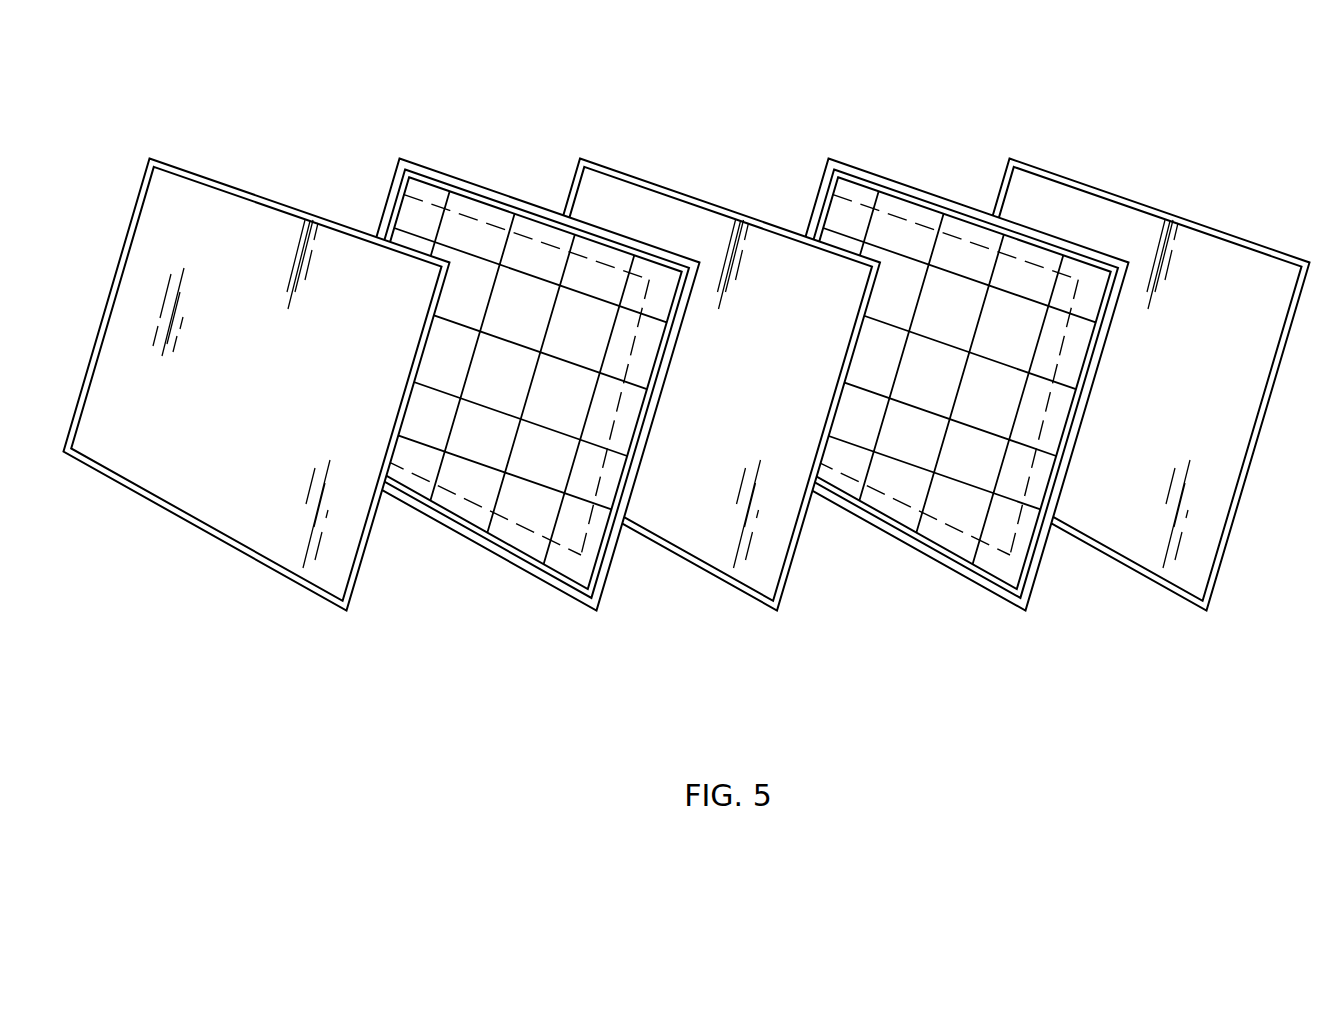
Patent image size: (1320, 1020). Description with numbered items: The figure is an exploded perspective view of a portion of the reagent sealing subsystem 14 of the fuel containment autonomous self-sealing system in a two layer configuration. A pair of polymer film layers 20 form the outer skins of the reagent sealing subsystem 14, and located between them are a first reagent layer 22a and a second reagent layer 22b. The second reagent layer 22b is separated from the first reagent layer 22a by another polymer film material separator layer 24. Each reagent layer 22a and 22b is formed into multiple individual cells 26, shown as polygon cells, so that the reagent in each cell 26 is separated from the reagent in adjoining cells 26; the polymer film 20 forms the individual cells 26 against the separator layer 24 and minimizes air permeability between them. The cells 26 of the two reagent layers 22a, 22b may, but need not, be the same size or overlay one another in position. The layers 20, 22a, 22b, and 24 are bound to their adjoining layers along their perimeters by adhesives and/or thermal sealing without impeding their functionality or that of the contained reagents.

The reagent sealing subsystem 14 is at (758, 140).
The polymer film layer 20 is at (215, 199).
The first reagent layer 22a is at (620, 590).
The second reagent layer 22b is at (895, 166).
The polymer film material separator layer 24 is at (756, 597).
The cell 26 is at (473, 452).